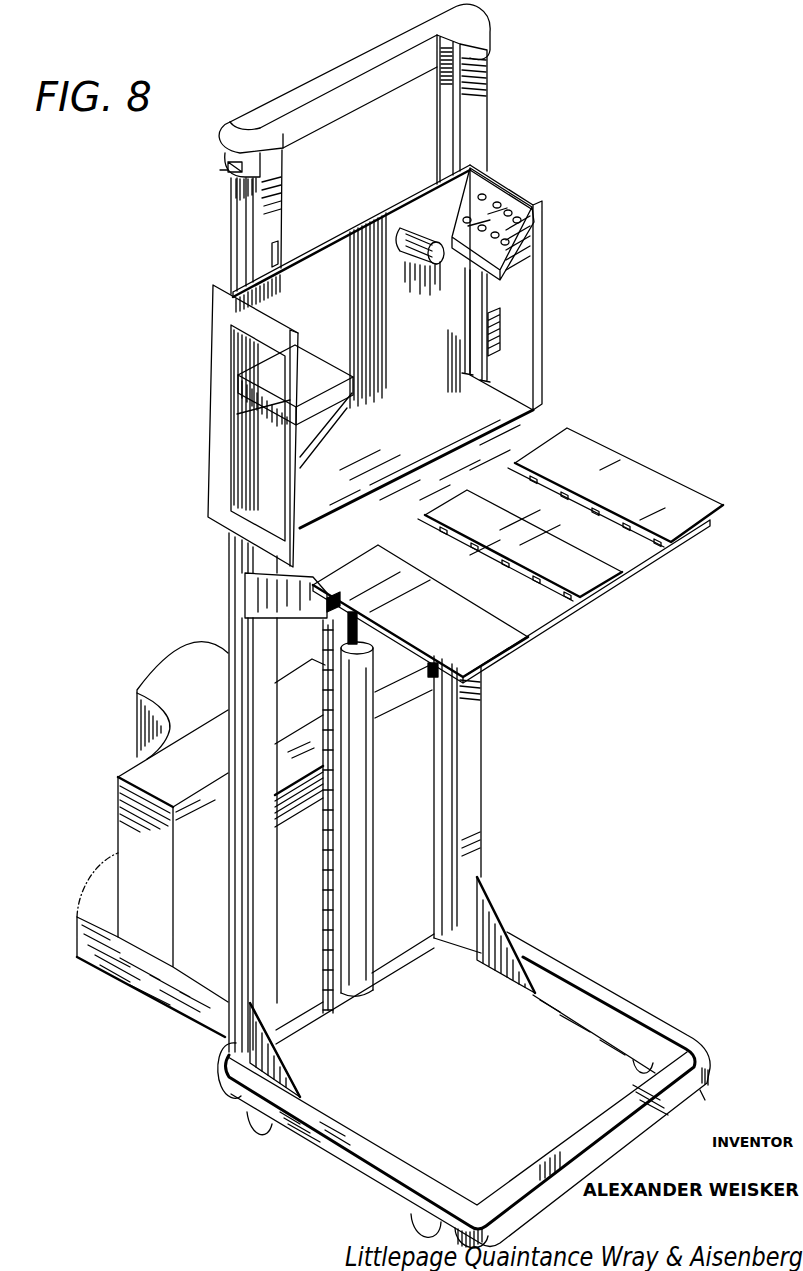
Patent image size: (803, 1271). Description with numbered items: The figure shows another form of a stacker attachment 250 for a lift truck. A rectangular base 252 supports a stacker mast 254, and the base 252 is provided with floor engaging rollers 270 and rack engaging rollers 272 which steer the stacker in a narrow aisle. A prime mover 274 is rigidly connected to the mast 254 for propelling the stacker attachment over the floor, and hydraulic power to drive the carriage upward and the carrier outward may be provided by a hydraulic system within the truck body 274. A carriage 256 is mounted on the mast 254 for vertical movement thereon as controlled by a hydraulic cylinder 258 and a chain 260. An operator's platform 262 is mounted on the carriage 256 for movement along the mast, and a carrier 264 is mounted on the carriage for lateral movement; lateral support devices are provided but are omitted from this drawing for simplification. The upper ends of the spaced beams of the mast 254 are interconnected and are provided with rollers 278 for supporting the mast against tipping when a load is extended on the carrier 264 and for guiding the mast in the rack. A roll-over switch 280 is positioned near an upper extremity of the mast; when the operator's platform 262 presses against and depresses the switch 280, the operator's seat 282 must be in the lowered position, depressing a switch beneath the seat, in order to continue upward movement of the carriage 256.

The stacker attachment 250 is at (512, 894).
The rectangular base 252 is at (577, 972).
The stacker mast 254 is at (469, 803).
The carriage 256 is at (262, 602).
The hydraulic cylinder 258 is at (354, 838).
The chain 260 is at (329, 1013).
The operator's platform 262 is at (497, 407).
The carrier 264 is at (643, 495).
The floor engaging rollers 270 is at (412, 1226).
The rack engaging rollers 272 is at (224, 1098).
The prime mover 274 is at (143, 1001).
The rollers 278 is at (243, 167).
The roll-over switch 280 is at (270, 252).
The operator's seat 282 is at (325, 366).